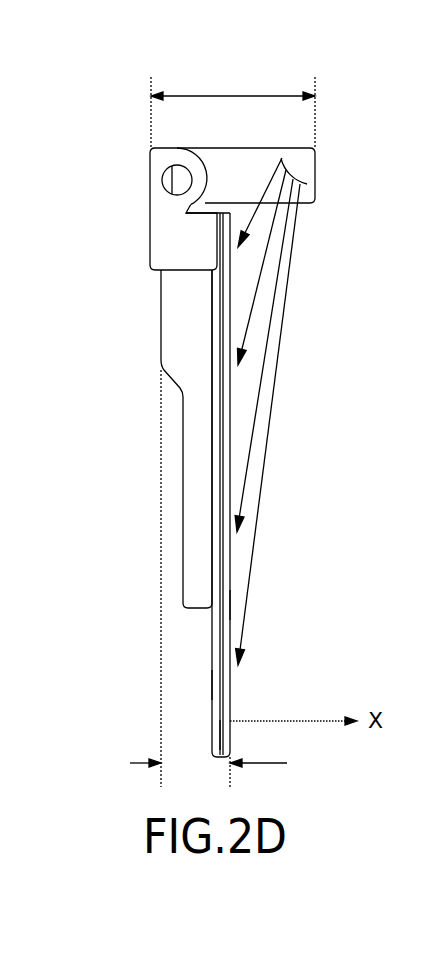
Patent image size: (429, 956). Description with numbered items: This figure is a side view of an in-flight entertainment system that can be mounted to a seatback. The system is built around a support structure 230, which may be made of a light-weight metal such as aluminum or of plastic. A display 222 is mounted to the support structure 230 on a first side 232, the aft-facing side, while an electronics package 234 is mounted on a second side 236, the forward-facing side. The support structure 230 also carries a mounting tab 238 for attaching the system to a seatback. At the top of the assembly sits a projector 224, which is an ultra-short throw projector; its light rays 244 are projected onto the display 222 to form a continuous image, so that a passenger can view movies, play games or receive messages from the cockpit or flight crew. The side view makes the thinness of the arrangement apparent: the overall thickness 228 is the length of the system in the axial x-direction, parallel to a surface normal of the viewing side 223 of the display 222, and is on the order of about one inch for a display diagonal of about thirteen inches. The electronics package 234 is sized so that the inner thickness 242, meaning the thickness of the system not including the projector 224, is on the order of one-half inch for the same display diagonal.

The display 222 is at (230, 693).
The viewing side 223 is at (230, 603).
The projector 224 is at (296, 168).
The overall thickness 228 is at (230, 96).
The support structure 230 is at (213, 683).
The first side 232 is at (218, 735).
The electronics package 234 is at (175, 352).
The second side 236 is at (213, 645).
The mounting tab 238 is at (160, 250).
The inner thickness 242 is at (287, 763).
The light rays 244 is at (300, 348).